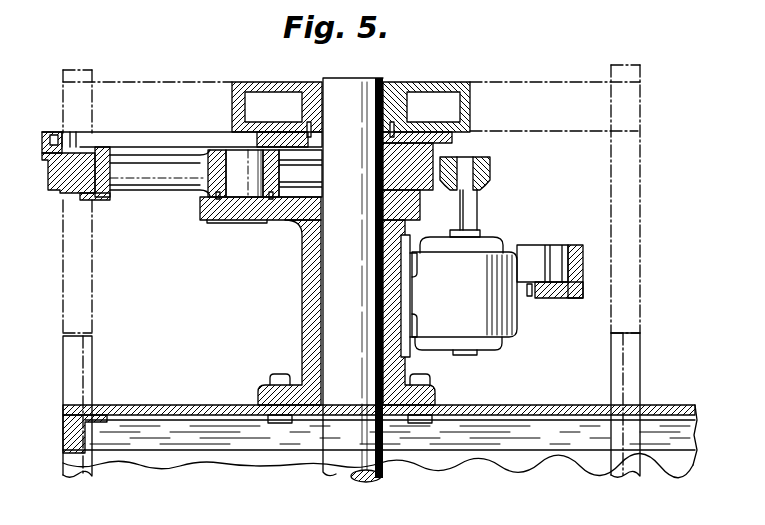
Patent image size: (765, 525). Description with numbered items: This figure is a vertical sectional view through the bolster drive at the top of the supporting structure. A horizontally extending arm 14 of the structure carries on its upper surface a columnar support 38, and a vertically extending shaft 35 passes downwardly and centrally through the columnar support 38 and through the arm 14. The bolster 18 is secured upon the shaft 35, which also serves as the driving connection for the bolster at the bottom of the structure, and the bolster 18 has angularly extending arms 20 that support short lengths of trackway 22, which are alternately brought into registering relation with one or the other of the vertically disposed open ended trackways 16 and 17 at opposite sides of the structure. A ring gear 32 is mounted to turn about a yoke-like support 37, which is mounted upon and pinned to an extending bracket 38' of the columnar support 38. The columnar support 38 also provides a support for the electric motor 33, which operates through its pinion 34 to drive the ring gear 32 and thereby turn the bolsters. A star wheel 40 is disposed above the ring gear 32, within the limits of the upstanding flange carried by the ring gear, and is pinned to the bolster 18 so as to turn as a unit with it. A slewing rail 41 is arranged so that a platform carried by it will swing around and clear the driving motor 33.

The arm 14 is at (128, 428).
The trackway 16 is at (627, 362).
The trackway 17 is at (77, 372).
The bolster 18 is at (386, 92).
The arm 20 is at (125, 92).
The short length of trackway 22 is at (70, 283).
The ring gear 32 is at (72, 173).
The electric motor 33 is at (468, 304).
The pinion 34 is at (481, 176).
The shaft 35 is at (333, 468).
The yoke-like support 37 is at (213, 180).
The columnar support 38 is at (172, 257).
The bracket 38' is at (251, 242).
The star wheel 40 is at (277, 136).
The slewing rail 41 is at (572, 260).